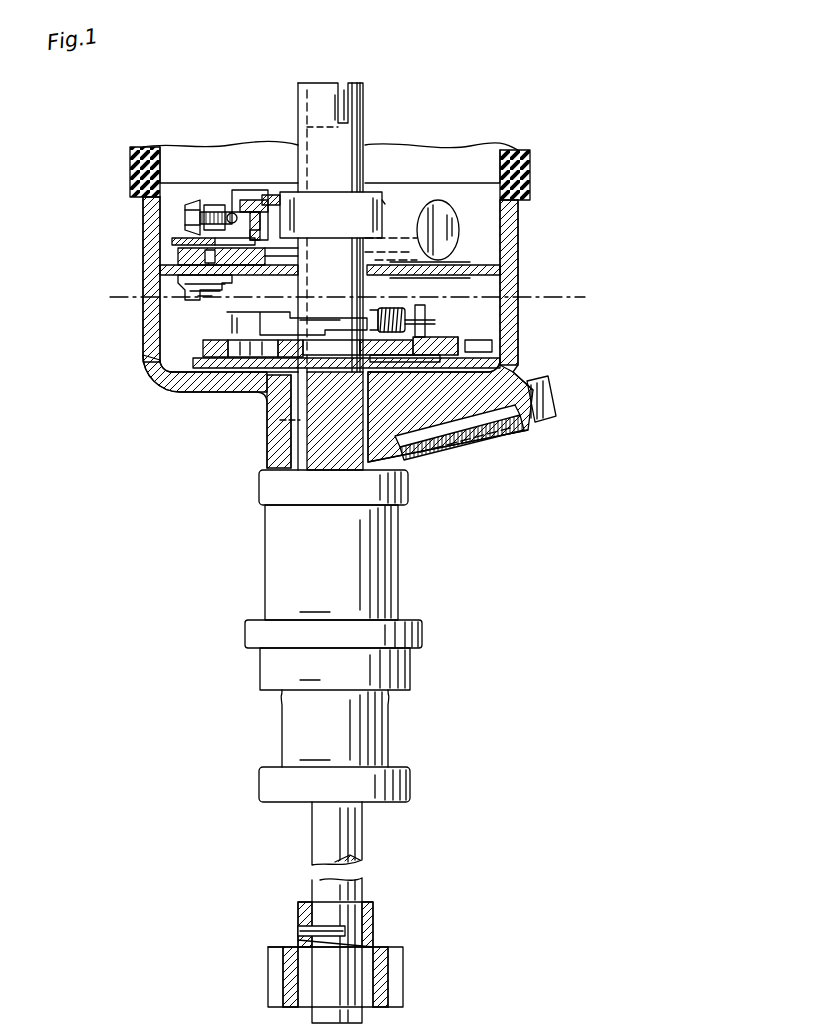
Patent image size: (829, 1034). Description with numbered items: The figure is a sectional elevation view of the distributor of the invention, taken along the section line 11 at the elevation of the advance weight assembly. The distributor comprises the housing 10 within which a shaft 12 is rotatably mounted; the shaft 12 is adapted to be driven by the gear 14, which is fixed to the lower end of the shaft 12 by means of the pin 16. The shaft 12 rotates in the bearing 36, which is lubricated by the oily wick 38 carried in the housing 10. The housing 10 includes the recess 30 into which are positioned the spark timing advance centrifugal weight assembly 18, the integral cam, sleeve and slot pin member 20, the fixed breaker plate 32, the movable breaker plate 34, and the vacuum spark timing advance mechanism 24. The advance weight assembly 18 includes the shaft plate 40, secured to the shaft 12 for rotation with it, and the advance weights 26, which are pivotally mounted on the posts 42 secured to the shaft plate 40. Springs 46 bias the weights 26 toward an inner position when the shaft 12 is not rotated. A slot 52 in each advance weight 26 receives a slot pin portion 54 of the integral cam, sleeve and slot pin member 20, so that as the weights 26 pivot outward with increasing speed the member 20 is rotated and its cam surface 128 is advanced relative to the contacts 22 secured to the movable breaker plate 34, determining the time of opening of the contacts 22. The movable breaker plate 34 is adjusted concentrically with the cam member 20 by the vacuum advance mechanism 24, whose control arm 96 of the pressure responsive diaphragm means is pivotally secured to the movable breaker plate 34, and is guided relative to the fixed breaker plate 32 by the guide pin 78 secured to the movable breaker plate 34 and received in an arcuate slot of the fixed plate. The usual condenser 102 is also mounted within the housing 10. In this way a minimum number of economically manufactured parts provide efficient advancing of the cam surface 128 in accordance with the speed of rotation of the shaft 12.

The housing 10 is at (518, 240).
The section line 11— 11 is at (110, 297).
The shaft 12 is at (363, 828).
The gear 14 is at (403, 962).
The pin 16 is at (300, 930).
The spark timing advance centrifugal weight assembly 18 is at (440, 332).
The integral cam, sleeve and slot pin member 20 is at (372, 190).
The contacts 22 is at (230, 188).
The vacuum spark timing advance mechanism 24 is at (238, 180).
The advance weights 26 is at (190, 362).
The recess 30 is at (497, 348).
The fixed breaker plate 32 is at (465, 256).
The movable breaker plate 34 is at (246, 294).
The bearing 36 is at (290, 430).
The oily wick 38 is at (445, 432).
The shaft plate 40 is at (193, 345).
The posts 42 is at (457, 353).
The springs 46 is at (400, 300).
The slot 52 is at (265, 348).
The slot pin portion 54 is at (232, 350).
The guide pin 78 is at (180, 258).
The control arm 96 is at (175, 240).
The condenser 102 is at (442, 201).
The cam surface 128 is at (385, 203).